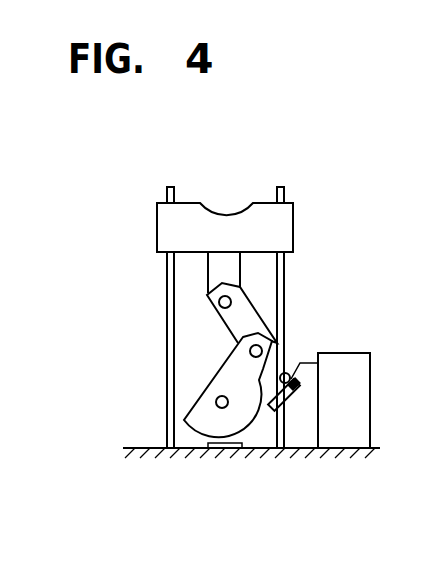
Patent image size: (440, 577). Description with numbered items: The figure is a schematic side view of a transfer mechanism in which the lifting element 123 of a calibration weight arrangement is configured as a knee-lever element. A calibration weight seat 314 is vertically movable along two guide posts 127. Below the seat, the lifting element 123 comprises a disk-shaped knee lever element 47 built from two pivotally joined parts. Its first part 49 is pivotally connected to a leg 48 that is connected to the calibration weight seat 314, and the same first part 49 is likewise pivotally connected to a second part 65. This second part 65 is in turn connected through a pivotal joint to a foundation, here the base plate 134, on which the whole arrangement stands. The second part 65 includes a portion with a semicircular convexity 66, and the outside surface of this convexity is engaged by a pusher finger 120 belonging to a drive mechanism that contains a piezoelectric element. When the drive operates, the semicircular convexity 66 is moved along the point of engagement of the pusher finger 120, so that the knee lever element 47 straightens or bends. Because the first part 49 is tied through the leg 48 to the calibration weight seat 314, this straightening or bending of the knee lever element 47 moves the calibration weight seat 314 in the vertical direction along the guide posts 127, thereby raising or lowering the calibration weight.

The calibration weight seat 314 is at (260, 228).
The leg 48 is at (230, 270).
The knee lever element 47 is at (292, 318).
The guide posts 127 is at (167, 275).
The first part 49 is at (233, 318).
The lifting element 123 is at (220, 337).
The base plate 134 is at (163, 458).
The second part 65 is at (224, 438).
The semicircular convexity 66 is at (245, 413).
The pusher finger 120 is at (280, 412).